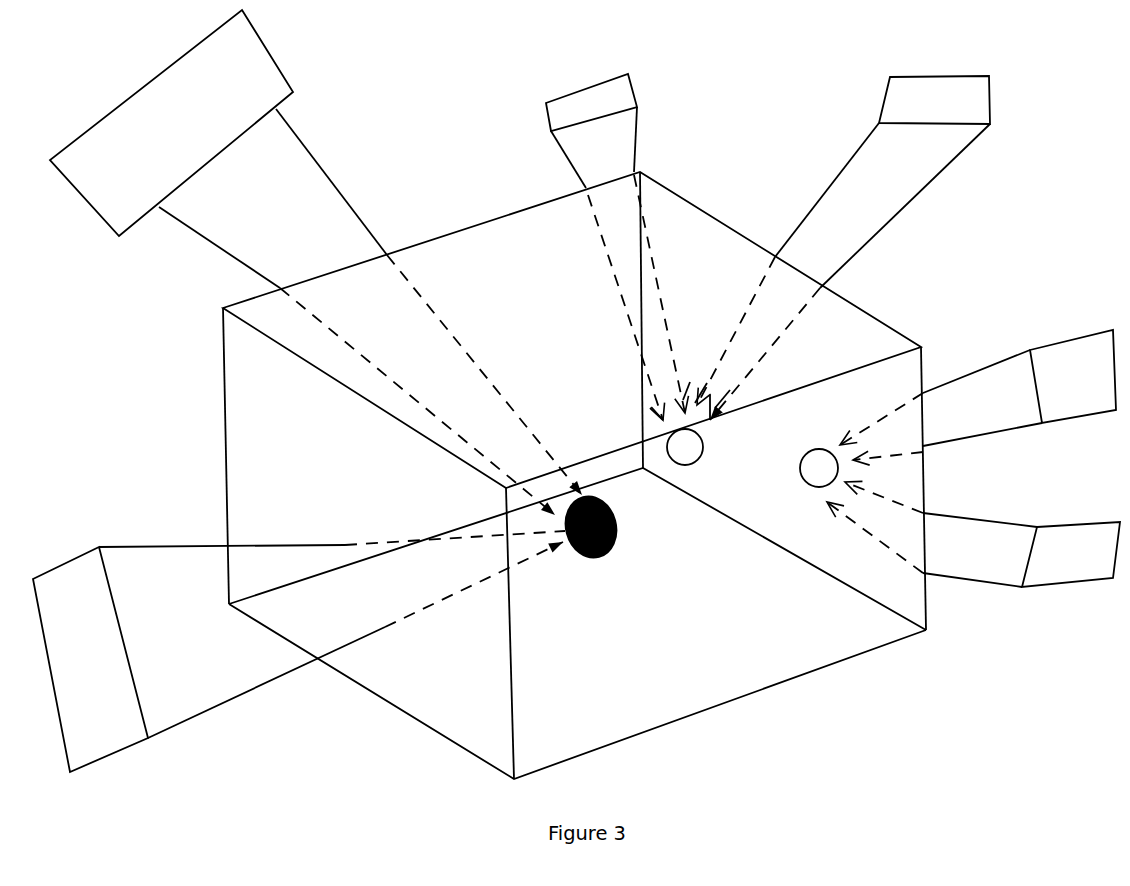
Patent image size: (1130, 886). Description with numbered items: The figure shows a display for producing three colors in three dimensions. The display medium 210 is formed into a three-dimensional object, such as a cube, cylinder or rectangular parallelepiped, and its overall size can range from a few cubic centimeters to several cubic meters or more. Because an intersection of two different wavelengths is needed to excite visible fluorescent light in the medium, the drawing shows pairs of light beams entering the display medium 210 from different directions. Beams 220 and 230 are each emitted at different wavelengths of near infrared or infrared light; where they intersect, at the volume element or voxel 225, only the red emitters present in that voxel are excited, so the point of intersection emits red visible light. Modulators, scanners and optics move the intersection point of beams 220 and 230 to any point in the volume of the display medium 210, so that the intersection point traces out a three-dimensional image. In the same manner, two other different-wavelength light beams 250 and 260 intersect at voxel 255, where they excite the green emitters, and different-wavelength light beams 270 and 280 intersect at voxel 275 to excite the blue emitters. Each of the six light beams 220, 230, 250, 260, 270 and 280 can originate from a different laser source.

The display medium 210 is at (574, 475).
The light beam 220 is at (299, 651).
The volume element (voxel) 225 is at (601, 565).
The light beam 230 is at (316, 262).
The light beam 250 is at (843, 248).
The voxel 255 is at (700, 460).
The light beam 260 is at (615, 247).
The light beam 270 is at (978, 395).
The voxel 275 is at (819, 487).
The light beam 280 is at (973, 534).